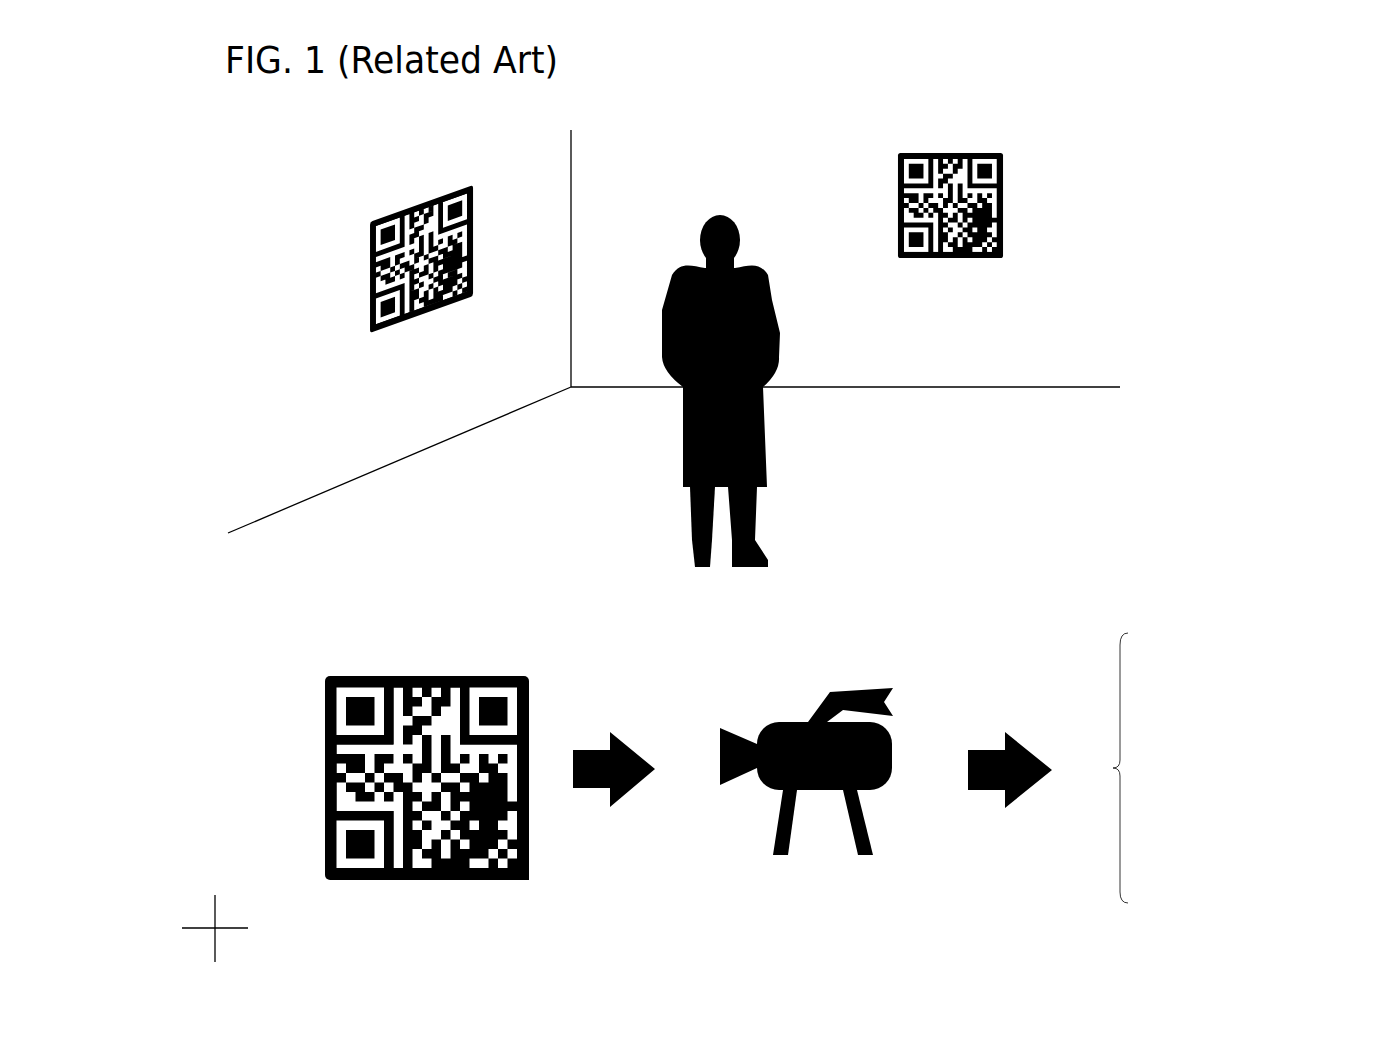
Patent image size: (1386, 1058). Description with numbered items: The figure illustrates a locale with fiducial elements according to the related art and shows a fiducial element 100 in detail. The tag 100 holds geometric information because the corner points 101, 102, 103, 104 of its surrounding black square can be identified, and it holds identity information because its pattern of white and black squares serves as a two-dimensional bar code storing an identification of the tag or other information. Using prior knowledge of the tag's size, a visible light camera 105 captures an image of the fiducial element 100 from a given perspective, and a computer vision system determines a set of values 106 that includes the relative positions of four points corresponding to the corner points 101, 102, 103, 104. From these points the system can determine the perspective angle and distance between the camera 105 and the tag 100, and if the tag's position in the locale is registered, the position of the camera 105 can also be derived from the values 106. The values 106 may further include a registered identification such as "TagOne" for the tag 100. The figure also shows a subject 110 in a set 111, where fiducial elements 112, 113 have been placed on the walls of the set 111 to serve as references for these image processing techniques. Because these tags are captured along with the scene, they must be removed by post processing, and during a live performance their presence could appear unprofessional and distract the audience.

The fiducial element 100 is at (424, 767).
The corner point 101 is at (345, 706).
The corner point 102 is at (507, 707).
The corner point 103 is at (350, 848).
The corner point 104 is at (507, 860).
The visible light camera 105 is at (834, 661).
The set of values 106 is at (1268, 661).
The subject 110 is at (700, 257).
The set 111 is at (605, 432).
The fiducial element 112 is at (1003, 212).
The fiducial element 113 is at (370, 265).